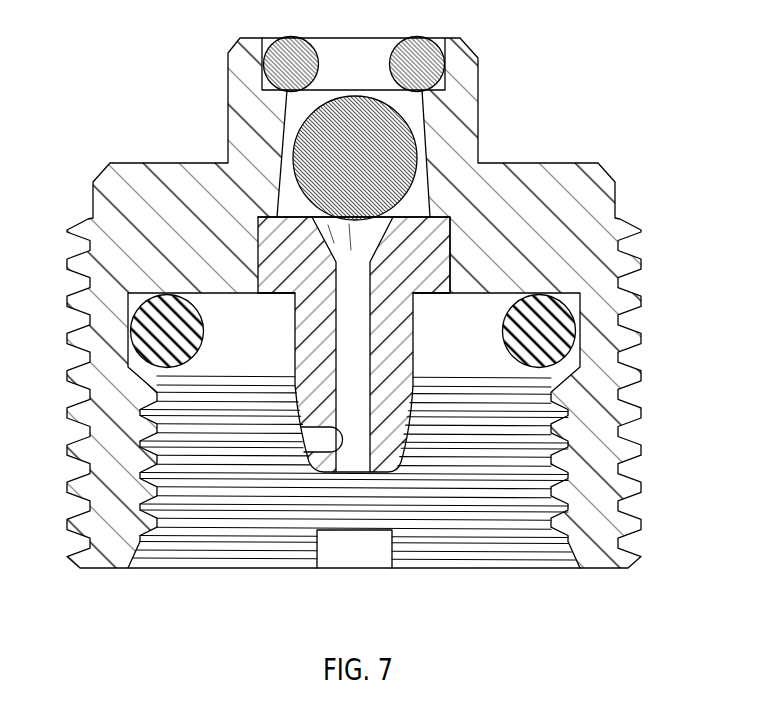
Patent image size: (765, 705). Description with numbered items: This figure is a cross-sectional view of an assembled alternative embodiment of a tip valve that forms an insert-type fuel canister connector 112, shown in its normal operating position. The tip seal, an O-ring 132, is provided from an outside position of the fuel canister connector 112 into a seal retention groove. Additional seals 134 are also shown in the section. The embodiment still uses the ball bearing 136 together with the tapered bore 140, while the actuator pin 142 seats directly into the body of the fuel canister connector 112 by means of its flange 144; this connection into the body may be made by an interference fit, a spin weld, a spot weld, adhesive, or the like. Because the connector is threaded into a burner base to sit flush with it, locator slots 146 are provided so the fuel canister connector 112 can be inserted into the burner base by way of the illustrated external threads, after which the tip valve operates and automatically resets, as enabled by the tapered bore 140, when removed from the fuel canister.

The fuel canister connector 112 is at (570, 176).
The O-ring 132 is at (416, 44).
The O-ring seals 134 is at (548, 340).
The ball bearing 136 is at (393, 150).
The tapered bore 140 is at (278, 157).
The actuator pin 142 is at (476, 281).
The flange 144 is at (273, 258).
The locator slots 146 is at (301, 587).